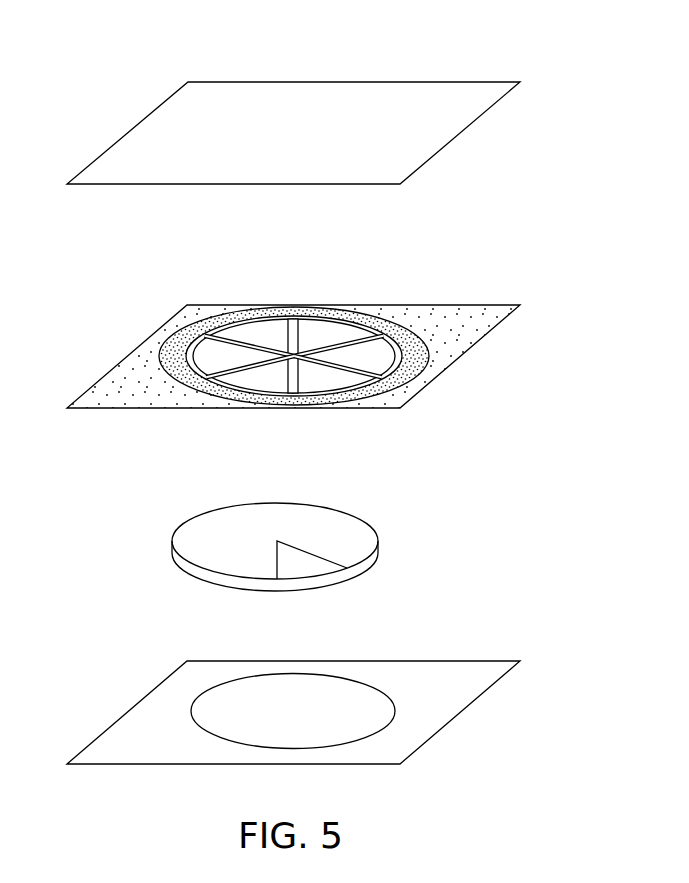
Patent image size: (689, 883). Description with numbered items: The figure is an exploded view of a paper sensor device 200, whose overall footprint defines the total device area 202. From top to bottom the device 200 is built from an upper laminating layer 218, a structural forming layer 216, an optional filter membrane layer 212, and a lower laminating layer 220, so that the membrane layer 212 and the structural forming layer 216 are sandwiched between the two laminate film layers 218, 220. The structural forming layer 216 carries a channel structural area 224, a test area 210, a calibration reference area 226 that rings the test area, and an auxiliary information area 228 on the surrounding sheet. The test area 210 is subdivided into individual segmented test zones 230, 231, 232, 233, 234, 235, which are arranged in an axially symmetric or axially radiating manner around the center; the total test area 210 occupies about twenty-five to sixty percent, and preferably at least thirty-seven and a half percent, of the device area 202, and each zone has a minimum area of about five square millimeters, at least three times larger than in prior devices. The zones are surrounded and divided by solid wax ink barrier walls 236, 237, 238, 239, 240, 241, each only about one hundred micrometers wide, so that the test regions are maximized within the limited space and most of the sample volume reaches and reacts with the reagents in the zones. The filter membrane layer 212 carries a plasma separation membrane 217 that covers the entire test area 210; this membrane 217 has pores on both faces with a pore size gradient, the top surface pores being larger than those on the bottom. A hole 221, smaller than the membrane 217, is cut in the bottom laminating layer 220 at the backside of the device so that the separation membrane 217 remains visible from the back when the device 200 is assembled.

The paper sensor device 200 is at (92, 73).
The device 202 is at (488, 166).
The laminating layer 218 is at (477, 82).
The structural forming layer 216 is at (430, 305).
The segmented test zone 231 is at (418, 345).
The calibration reference area 226 is at (190, 311).
The test area 210 is at (208, 347).
The segmented test zone 234 is at (212, 367).
The auxiliary information area 228 is at (163, 384).
The wax ink barrier wall 241 is at (292, 330).
The wax ink barrier wall 240 is at (255, 347).
The wax ink barrier wall 236 is at (323, 347).
The channel structural area 224 is at (380, 345).
The wax ink barrier wall 237 is at (378, 369).
The segmented test zone 235 is at (248, 333).
The segmented test zone 230 is at (338, 337).
The wax ink barrier wall 239 is at (247, 375).
The segmented test zone 233 is at (268, 382).
The wax ink barrier wall 238 is at (323, 388).
The segmented test zone 232 is at (345, 377).
The filter membrane layer 212 is at (401, 533).
The separation membrane 217 is at (198, 528).
The laminating layer 220 is at (440, 661).
The hole 221 is at (268, 750).